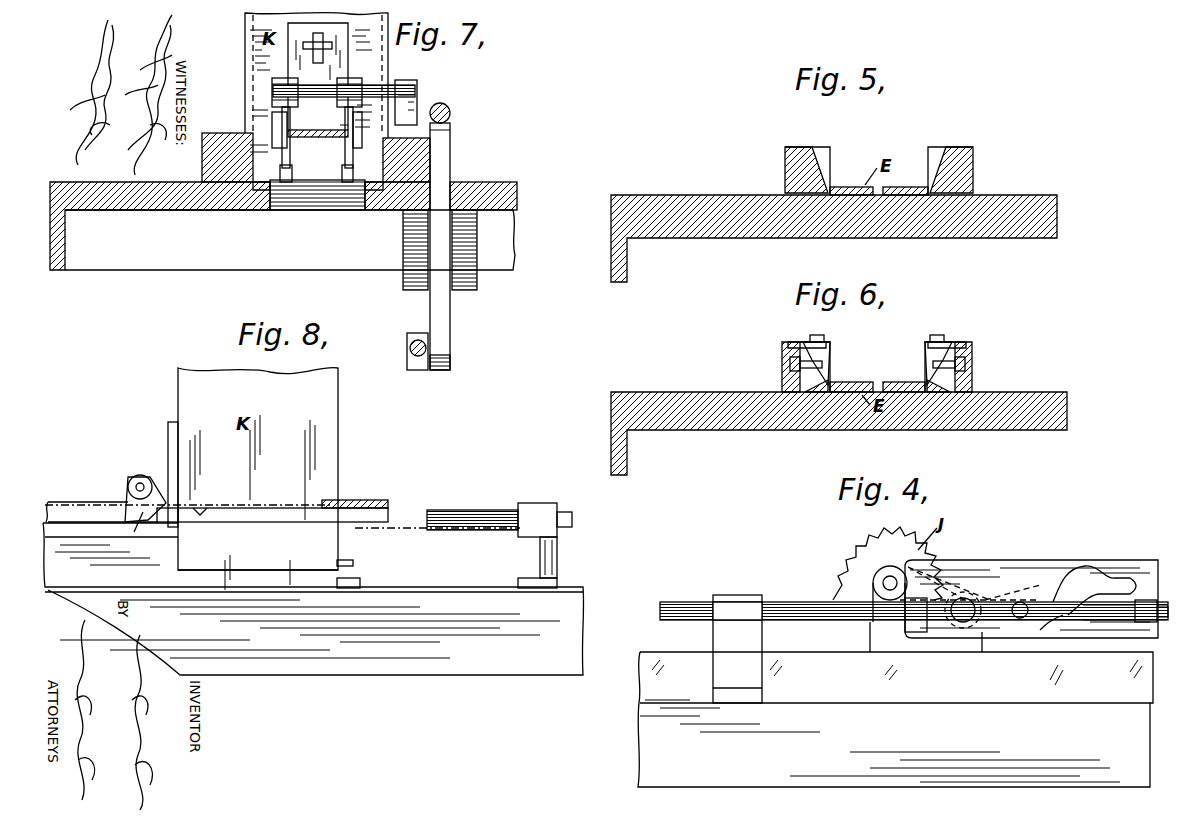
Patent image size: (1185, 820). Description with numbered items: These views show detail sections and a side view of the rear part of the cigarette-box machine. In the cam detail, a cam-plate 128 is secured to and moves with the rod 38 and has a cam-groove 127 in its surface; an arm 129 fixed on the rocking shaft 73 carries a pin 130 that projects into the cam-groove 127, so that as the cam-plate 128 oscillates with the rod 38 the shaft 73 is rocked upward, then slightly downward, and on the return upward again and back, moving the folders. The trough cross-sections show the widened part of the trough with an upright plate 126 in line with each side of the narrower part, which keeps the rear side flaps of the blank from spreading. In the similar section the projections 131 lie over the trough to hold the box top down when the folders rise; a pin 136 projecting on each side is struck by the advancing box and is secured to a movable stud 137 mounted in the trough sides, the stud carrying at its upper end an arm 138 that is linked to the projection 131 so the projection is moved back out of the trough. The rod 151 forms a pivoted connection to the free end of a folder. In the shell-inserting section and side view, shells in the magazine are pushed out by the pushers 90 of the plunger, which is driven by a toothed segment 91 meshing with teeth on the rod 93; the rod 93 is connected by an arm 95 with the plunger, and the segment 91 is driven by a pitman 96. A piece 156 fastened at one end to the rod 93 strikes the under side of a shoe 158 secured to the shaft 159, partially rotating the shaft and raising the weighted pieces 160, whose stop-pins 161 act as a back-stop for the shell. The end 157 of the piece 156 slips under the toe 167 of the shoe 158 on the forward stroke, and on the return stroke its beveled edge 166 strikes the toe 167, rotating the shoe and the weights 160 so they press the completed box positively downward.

In FIG. 4, the rod 38 is at (790, 604).
In FIG. 4, the rocking shaft 73 is at (965, 608).
In FIG. 7, the pushers 90 is at (292, 176).
In FIG. 8, the pushers 90 is at (352, 580).
In FIG. 7, the toothed segment 91 is at (450, 158).
In FIG. 7, the rod 93 is at (452, 115).
In FIG. 8, the rod 93 is at (462, 512).
In FIG. 8, the arm 95 is at (558, 555).
In FIG. 7, the pitman 96 is at (407, 350).
In FIG. 5, the upright plate 126 is at (836, 172).
In FIG. 6, the upright plate 126 is at (832, 385).
In FIG. 4, the cam-groove 127 is at (1105, 578).
In FIG. 4, the cam-plate 128 is at (1055, 568).
In FIG. 4, the arm 129 is at (985, 597).
In FIG. 4, the pin 130 is at (1064, 609).
In FIG. 6, the projections 131 is at (935, 345).
In FIG. 6, the pin 136 is at (815, 366).
In FIG. 6, the movable stud 137 is at (782, 350).
In FIG. 6, the arm 138 is at (790, 341).
In FIG. 7, the rod 151 is at (370, 90).
In FIG. 7, the piece 156 is at (402, 117).
In FIG. 8, the piece 156 is at (290, 523).
In FIG. 8, the end of piece 156 157 is at (185, 510).
In FIG. 8, the shoe 158 is at (150, 503).
In FIG. 8, the shaft 159 is at (140, 474).
In FIG. 7, the weighted pieces 160 is at (274, 126).
In FIG. 7, the stop-pin 161 is at (362, 152).
In FIG. 8, the beveled edge 166 is at (217, 504).
In FIG. 8, the toe 167 is at (137, 525).